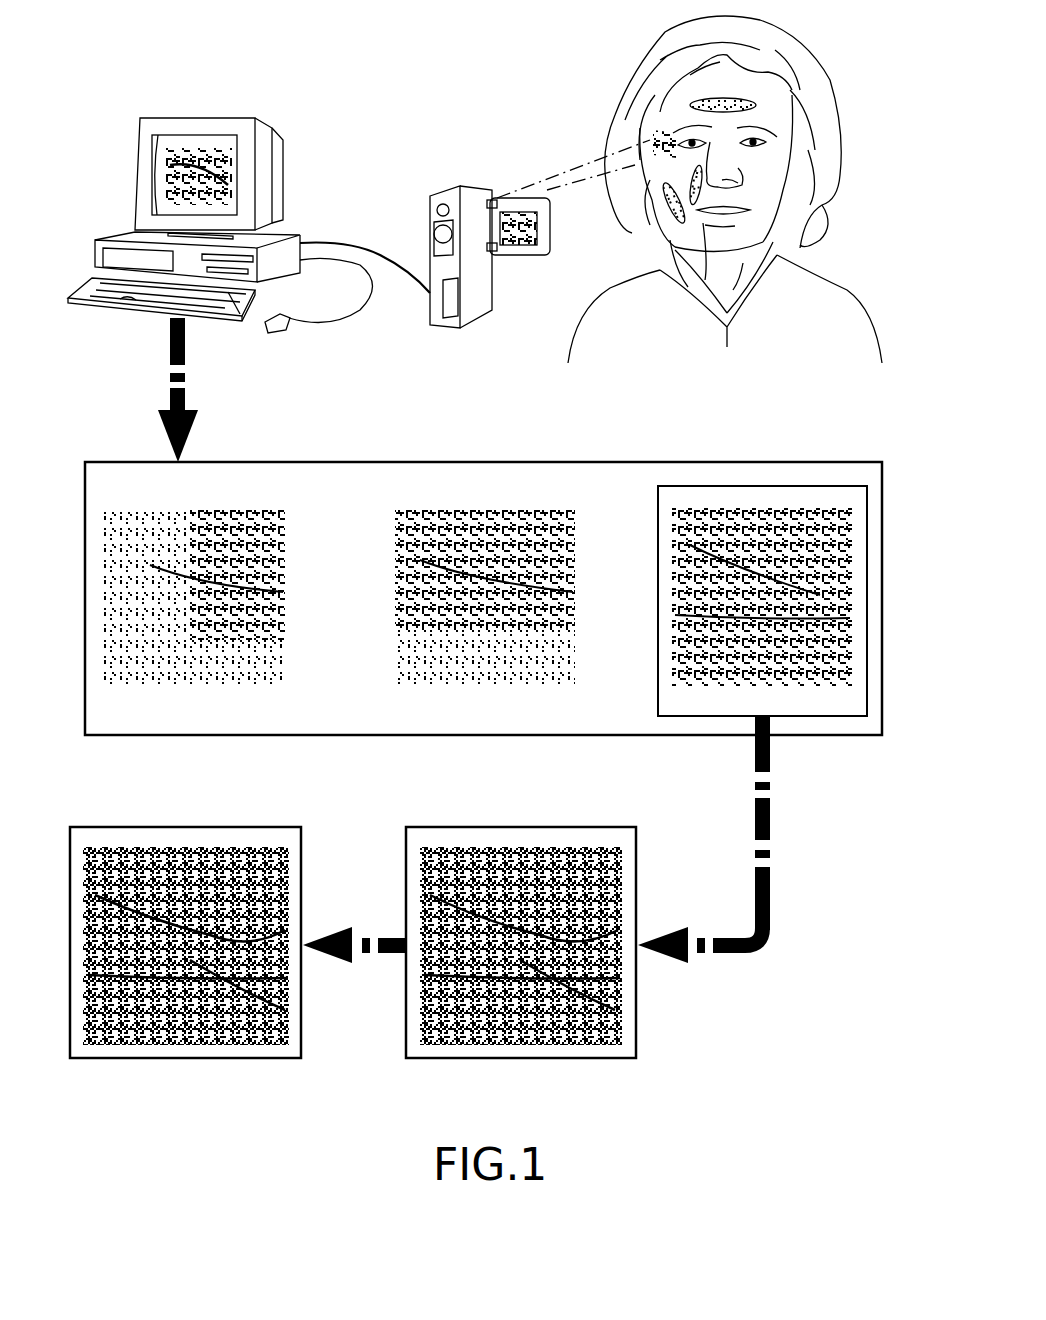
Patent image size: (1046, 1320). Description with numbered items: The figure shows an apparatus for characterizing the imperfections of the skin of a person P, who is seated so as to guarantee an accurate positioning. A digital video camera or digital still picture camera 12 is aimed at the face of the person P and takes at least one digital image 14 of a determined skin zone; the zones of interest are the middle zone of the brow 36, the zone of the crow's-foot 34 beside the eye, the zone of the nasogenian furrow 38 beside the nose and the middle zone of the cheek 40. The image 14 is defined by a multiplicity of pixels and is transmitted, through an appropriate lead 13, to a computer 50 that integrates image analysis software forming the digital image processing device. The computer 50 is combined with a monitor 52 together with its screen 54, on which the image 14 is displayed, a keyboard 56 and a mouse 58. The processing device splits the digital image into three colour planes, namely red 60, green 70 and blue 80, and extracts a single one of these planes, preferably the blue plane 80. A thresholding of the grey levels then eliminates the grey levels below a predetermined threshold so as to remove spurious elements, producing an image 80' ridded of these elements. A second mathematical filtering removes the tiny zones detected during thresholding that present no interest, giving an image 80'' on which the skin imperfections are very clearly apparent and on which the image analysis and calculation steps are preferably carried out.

The digital camera 12 is at (470, 182).
The lead 13 is at (365, 236).
The digital image 14 is at (193, 178).
The crow's-foot zone 34 is at (650, 141).
The middle zone of the brow 36 is at (727, 98).
The nasogenian furrow zone 38 is at (700, 195).
The middle zone of the cheek 40 is at (670, 210).
The computer 50 is at (300, 227).
The monitor 52 is at (275, 130).
The screen 54 is at (195, 143).
The keyboard 56 is at (110, 303).
The mouse 58 is at (293, 323).
The red colour plane 60 is at (213, 543).
The green colour plane 70 is at (470, 543).
The blue colour plane 80 is at (762, 567).
The thresholded image 80' is at (521, 908).
The filtered image 80'' is at (185, 908).
The person P is at (810, 310).